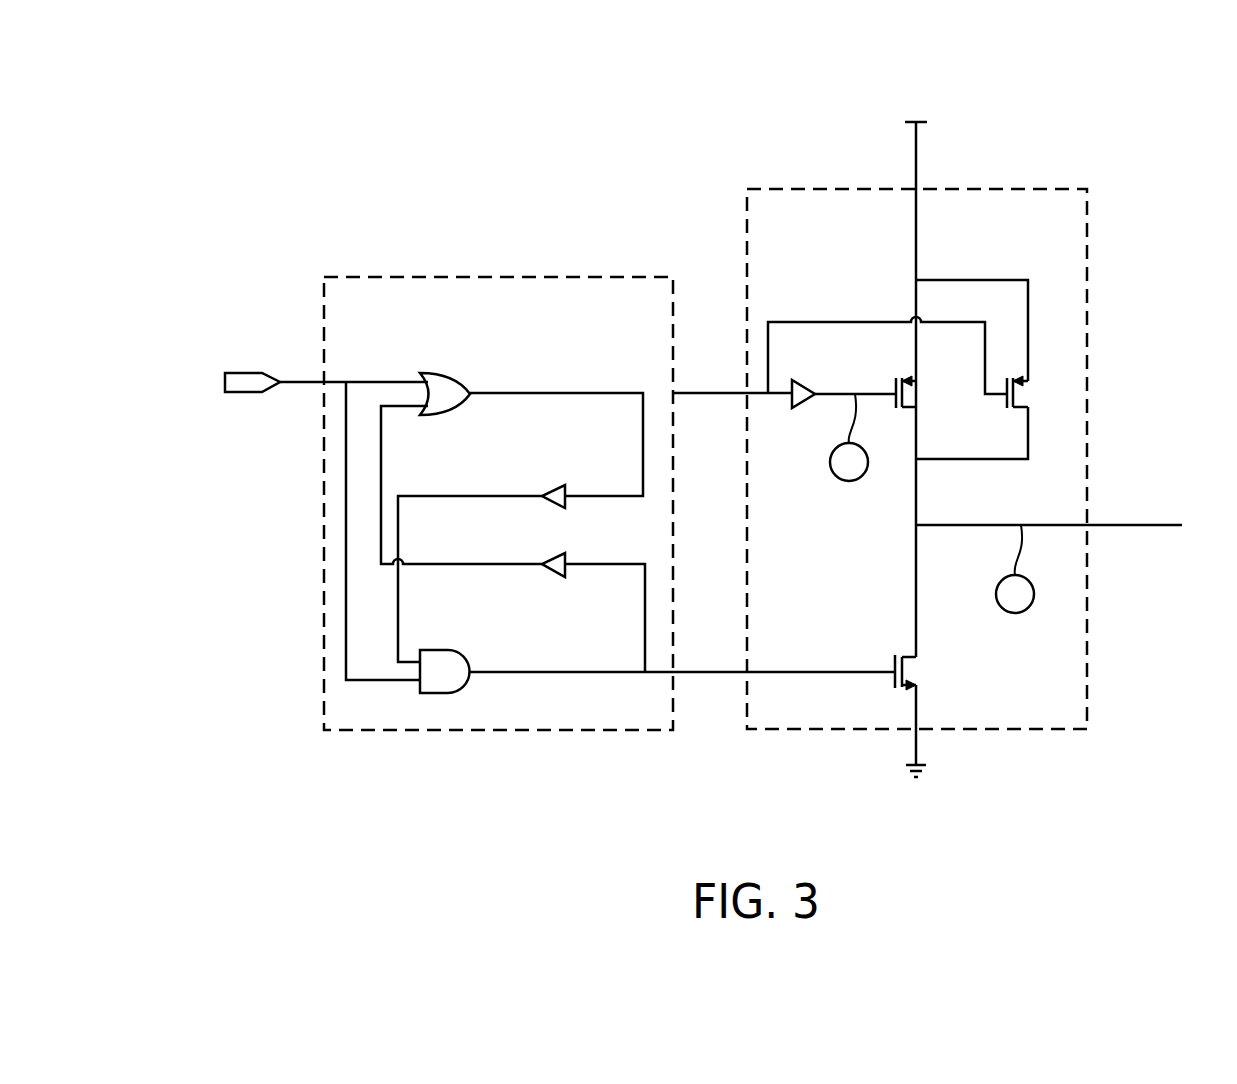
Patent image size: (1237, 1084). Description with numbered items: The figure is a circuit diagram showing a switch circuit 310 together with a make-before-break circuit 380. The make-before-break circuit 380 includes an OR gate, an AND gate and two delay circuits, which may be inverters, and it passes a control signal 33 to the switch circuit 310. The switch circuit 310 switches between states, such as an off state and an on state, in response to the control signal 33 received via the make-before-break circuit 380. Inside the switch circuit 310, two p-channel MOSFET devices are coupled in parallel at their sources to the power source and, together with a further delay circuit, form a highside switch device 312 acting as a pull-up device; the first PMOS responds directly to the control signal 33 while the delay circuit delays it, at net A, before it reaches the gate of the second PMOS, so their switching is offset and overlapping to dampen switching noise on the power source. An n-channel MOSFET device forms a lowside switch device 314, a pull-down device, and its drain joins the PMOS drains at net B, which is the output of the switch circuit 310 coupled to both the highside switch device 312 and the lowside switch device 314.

The control signal 33 is at (290, 350).
The make-before-break circuit 380 is at (609, 503).
The switch circuit 310 is at (927, 421).
The highside switch device 312 is at (1070, 301).
The lowside switch device 314 is at (1034, 684).